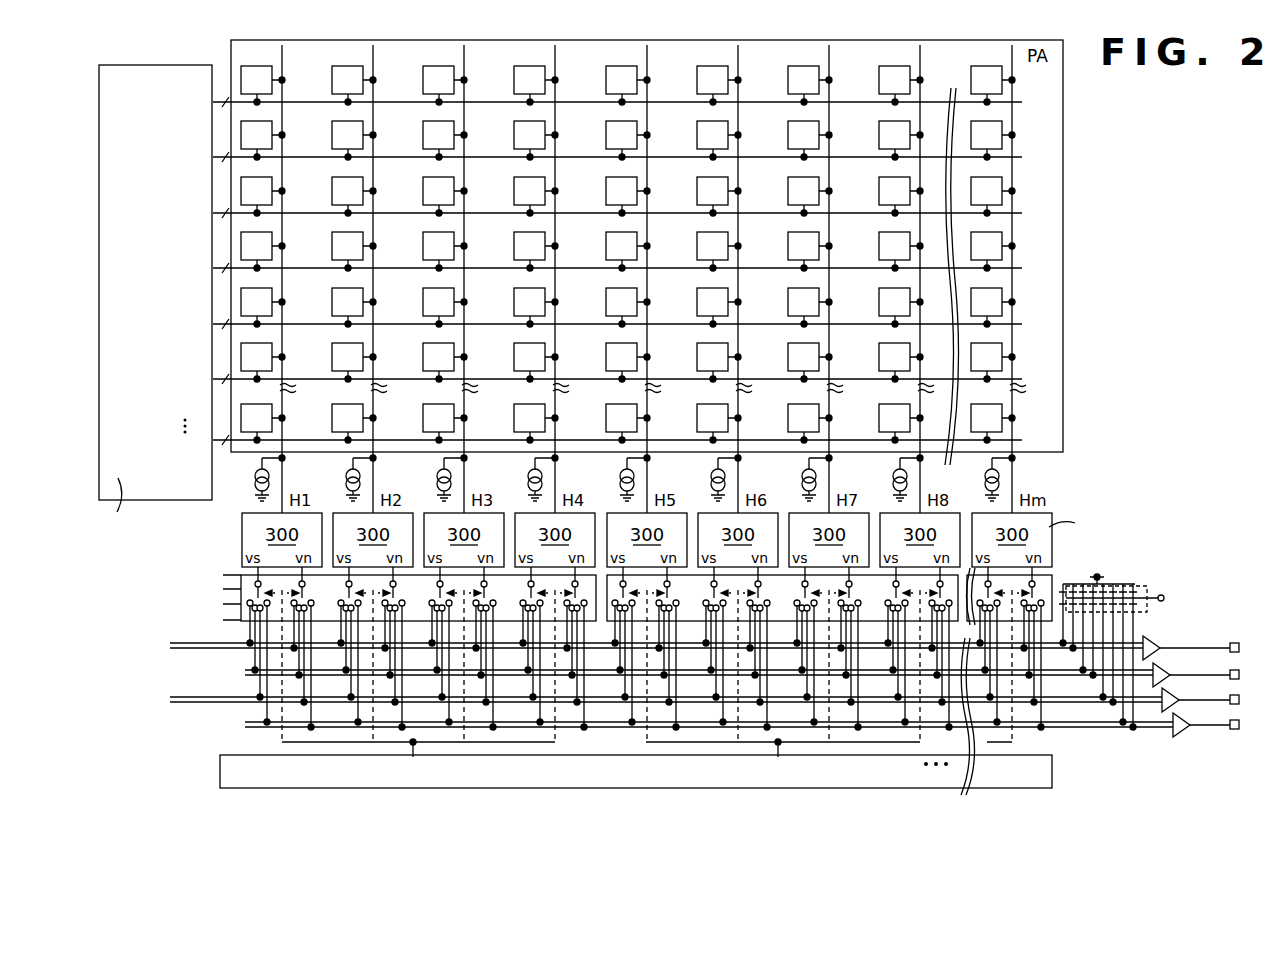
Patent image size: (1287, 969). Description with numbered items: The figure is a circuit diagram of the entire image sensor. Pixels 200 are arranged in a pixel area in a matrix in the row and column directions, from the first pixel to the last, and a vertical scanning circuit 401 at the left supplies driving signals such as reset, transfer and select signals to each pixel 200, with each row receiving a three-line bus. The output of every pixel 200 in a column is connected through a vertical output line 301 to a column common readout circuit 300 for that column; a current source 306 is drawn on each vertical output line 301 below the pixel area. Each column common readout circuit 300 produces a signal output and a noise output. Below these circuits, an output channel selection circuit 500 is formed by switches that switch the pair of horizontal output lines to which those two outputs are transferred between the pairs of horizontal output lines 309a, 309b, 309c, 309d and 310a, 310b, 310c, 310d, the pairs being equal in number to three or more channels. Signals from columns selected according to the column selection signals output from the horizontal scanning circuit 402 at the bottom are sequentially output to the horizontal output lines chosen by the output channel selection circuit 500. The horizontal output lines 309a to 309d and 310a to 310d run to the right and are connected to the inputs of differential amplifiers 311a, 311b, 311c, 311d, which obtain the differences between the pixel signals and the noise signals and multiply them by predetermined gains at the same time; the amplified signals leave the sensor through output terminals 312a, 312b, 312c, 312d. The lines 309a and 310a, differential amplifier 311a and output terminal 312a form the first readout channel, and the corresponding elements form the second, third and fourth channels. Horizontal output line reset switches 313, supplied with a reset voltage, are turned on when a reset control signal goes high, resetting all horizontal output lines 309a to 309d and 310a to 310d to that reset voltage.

The pixel 200 is at (433, 66).
The vertical output line 301 is at (285, 64).
The current source 306 is at (252, 477).
The column common readout circuit 300 is at (730, 533).
The horizontal output line 309a is at (172, 643).
The horizontal output line 309b is at (246, 670).
The horizontal output line 309c is at (172, 697).
The horizontal output line 309d is at (246, 722).
The horizontal output line 310a is at (172, 648).
The horizontal output line 310b is at (246, 675).
The horizontal output line 310c is at (172, 702).
The horizontal output line 310d is at (246, 727).
The differential amplifier 311a is at (1158, 639).
The differential amplifier 311b is at (1163, 665).
The differential amplifier 311c is at (1168, 712).
The differential amplifier 311d is at (1183, 738).
The output terminal 312a is at (1234, 641).
The output terminal 312b is at (1236, 668).
The output terminal 312c is at (1236, 706).
The output terminal 312d is at (1234, 731).
The horizontal output line reset switch 313 is at (1147, 588).
The vertical scanning circuit 401 is at (137, 262).
The horizontal scanning circuit 402 is at (217, 772).
The output channel selection circuit 500 is at (607, 612).